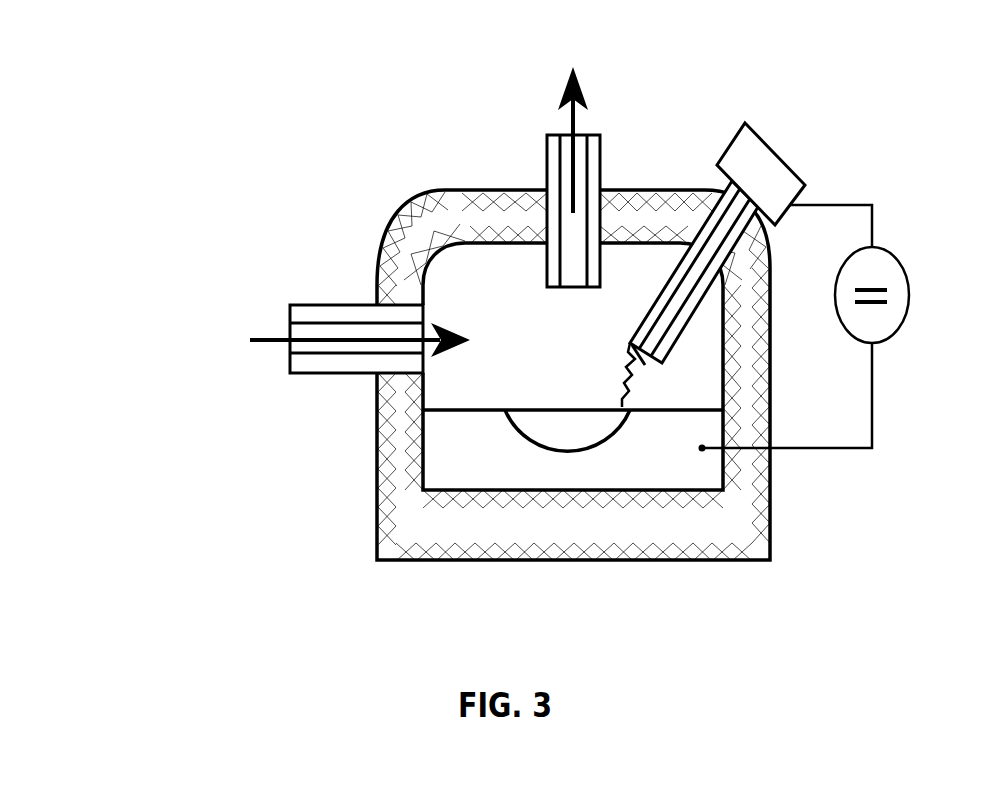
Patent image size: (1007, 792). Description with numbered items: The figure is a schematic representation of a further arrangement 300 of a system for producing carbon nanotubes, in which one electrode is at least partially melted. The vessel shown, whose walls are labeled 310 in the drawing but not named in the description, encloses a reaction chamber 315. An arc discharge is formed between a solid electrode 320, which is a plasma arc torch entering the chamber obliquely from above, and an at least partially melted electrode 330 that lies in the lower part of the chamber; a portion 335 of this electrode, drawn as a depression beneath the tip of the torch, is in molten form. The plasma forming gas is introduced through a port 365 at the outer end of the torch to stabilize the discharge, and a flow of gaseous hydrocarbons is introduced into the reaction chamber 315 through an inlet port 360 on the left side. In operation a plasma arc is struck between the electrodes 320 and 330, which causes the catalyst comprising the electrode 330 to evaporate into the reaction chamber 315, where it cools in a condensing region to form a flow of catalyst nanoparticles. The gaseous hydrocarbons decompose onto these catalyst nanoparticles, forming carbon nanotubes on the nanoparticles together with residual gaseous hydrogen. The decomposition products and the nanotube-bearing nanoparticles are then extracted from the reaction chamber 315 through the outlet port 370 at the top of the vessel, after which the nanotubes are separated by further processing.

The system 300 is at (130, 128).
The furnace vessel 310 is at (427, 200).
The reaction chamber 315 is at (458, 287).
The solid electrode 320 is at (728, 185).
The at least partially melted electrode 330 is at (495, 460).
The portion 335 is at (590, 450).
The inlet port 360 is at (310, 303).
The port 365 is at (762, 146).
The outlet port 370 is at (553, 142).